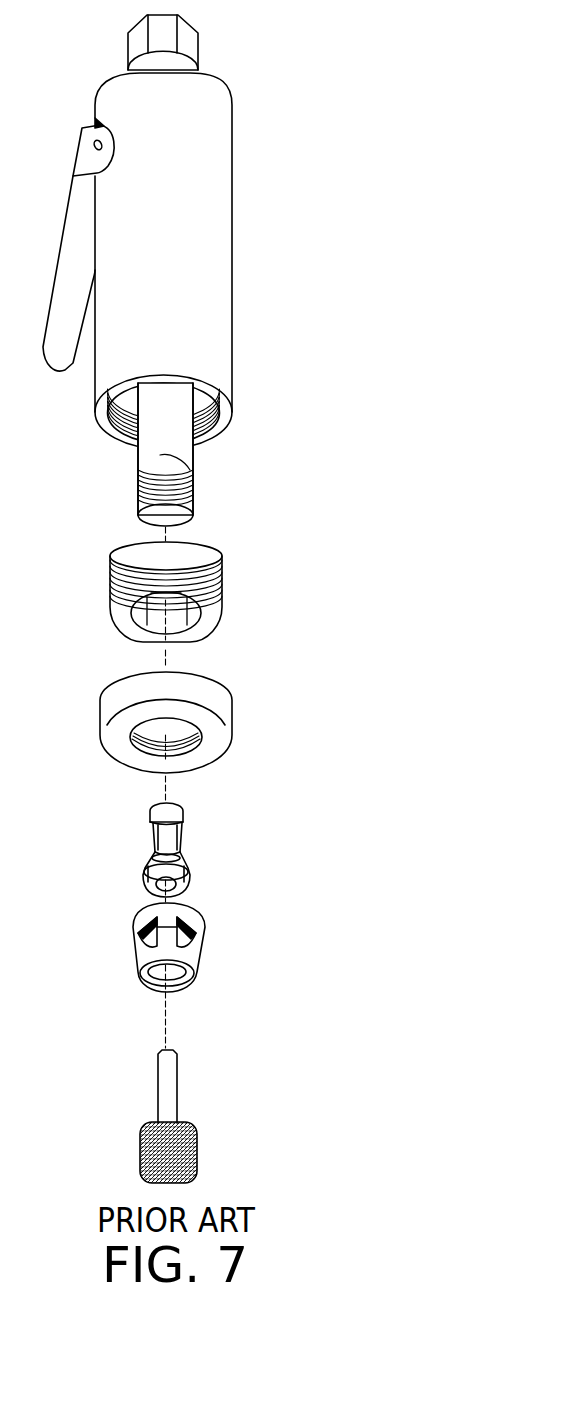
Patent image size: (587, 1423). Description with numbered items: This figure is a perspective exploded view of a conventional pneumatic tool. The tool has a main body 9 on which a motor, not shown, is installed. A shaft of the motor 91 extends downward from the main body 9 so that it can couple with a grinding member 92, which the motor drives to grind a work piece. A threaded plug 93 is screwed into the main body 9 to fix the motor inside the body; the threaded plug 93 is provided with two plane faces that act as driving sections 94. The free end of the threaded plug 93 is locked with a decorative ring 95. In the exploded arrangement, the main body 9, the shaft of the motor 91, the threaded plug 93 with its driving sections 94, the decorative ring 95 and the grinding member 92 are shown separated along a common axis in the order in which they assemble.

The main body 9 is at (203, 318).
The shaft of the motor 91 is at (174, 434).
The grinding member 92 is at (197, 1140).
The threaded plug 93 is at (112, 568).
The driving sections 94 is at (198, 577).
The decorative ring 95 is at (218, 700).